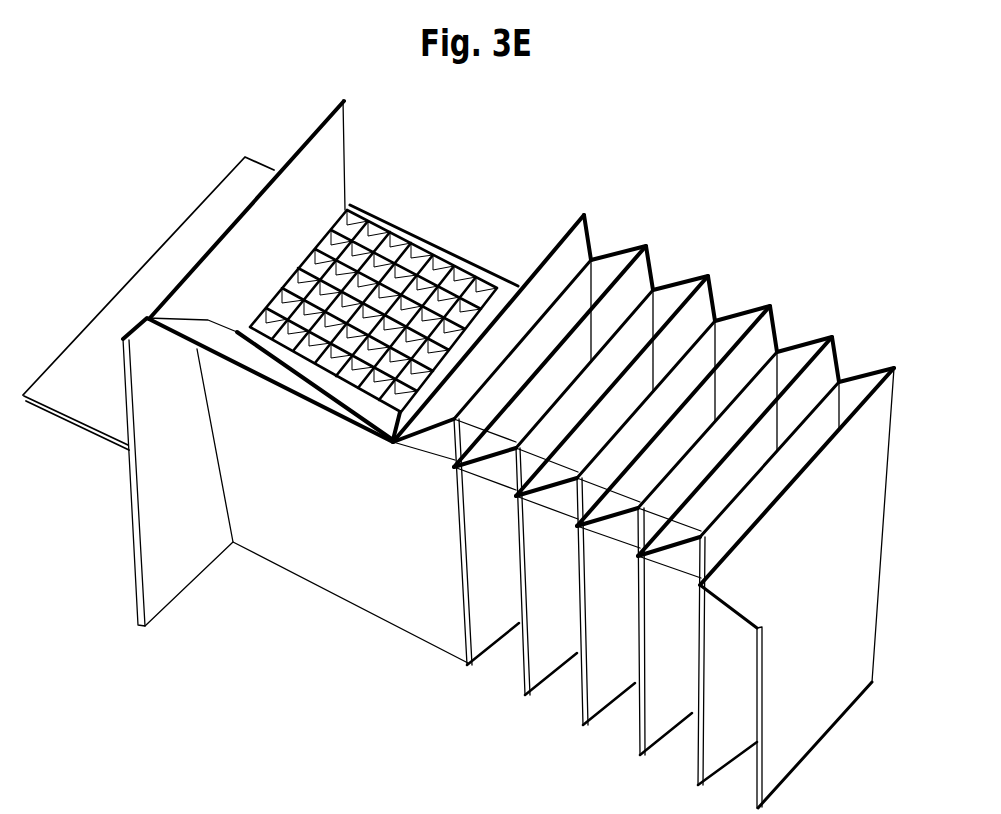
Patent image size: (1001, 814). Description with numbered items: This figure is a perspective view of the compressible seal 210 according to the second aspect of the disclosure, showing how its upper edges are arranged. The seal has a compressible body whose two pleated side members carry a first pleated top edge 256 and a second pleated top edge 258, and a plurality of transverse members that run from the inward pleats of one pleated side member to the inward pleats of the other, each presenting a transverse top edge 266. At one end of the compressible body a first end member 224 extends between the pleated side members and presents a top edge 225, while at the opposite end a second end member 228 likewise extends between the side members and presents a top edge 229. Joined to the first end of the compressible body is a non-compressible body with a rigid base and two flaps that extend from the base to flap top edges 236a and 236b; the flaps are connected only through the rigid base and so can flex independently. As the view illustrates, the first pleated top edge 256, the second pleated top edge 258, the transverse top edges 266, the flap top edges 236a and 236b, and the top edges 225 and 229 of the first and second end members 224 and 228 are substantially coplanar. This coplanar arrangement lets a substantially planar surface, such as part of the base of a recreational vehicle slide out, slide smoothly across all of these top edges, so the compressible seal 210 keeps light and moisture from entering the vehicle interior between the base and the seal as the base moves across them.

The compressible seal 210 is at (752, 205).
The first end member 224 is at (550, 242).
The top edge of first end member 225 is at (508, 279).
The second end member 228 is at (857, 522).
The top edge of second end member 229 is at (832, 472).
The flap top edge 236a is at (297, 146).
The flap top edge 236b is at (268, 385).
The first pleated top edge 256 is at (715, 290).
The second pleated top edge 258 is at (546, 497).
The transverse top edges 266 is at (592, 300).